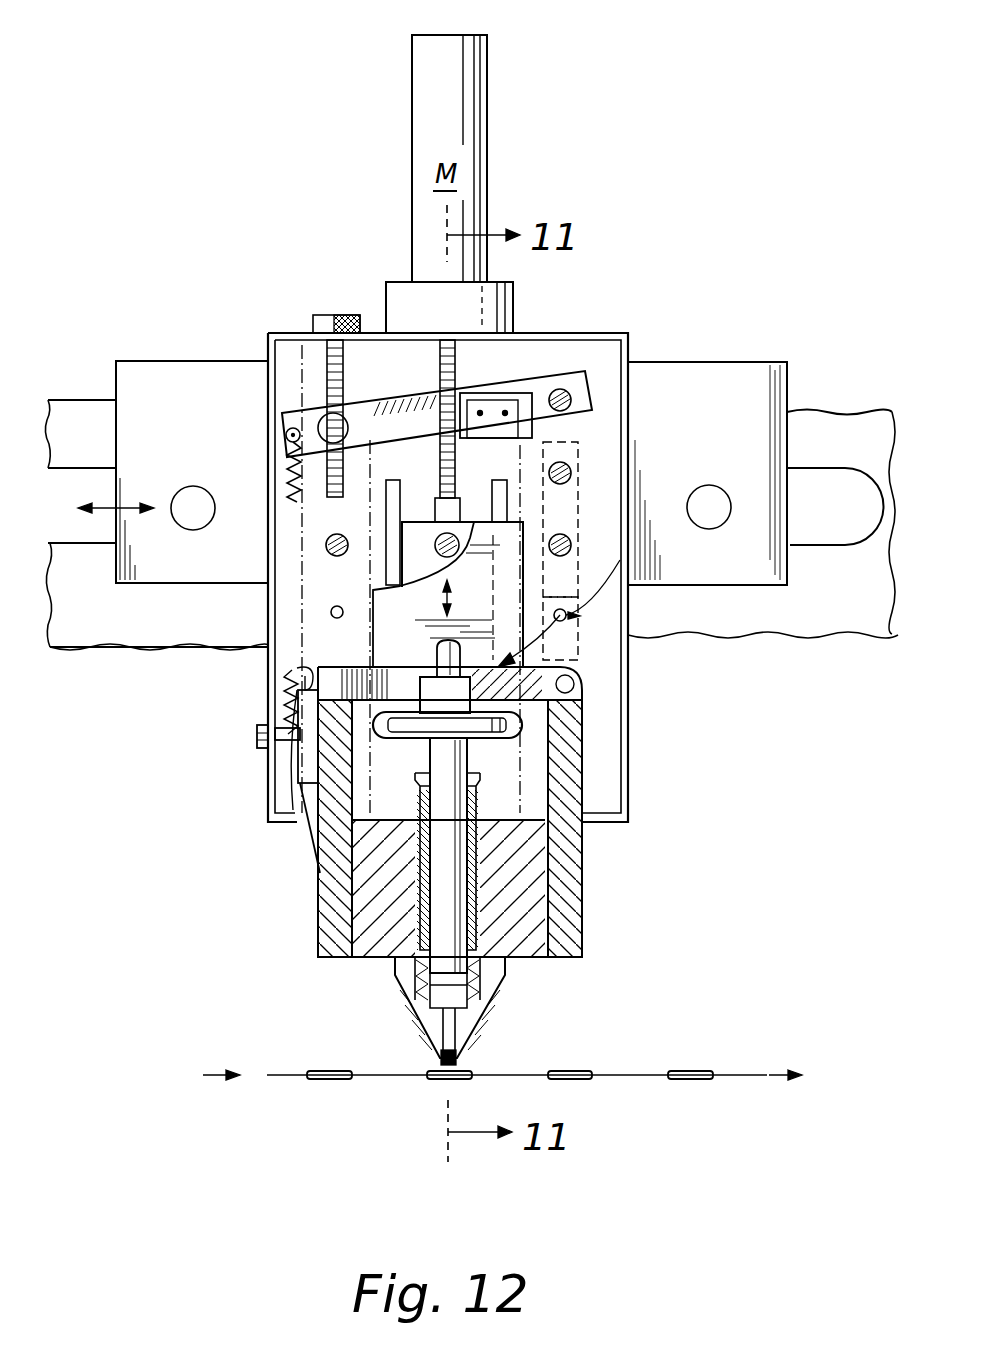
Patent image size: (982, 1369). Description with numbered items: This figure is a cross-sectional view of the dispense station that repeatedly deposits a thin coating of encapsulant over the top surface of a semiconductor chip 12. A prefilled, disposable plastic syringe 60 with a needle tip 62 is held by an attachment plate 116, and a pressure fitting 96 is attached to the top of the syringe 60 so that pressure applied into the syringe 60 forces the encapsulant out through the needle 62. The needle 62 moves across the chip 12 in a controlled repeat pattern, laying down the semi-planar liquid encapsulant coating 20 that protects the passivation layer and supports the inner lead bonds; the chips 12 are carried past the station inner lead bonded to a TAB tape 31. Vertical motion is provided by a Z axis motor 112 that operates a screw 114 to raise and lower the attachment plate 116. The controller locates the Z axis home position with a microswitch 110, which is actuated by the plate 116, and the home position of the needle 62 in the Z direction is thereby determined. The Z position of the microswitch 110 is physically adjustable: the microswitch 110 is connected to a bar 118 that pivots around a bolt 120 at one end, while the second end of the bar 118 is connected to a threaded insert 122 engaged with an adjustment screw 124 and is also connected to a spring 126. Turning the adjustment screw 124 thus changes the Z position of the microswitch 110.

The semiconductor chip 12 is at (326, 1069).
The liquid encapsulant coating 20 is at (700, 1070).
The TAB tape 31 is at (627, 1071).
The syringe 60 is at (438, 757).
The needle tip 62 is at (472, 1037).
The pressure fitting 96 is at (433, 686).
The microswitch 110 is at (490, 420).
The Z axis motor 112 is at (514, 303).
The screw 114 is at (440, 368).
The attachment plate 116 is at (525, 530).
The bar 118 is at (582, 345).
The bolt 120 is at (572, 397).
The threaded insert 122 is at (283, 416).
The adjustment screw 124 is at (313, 322).
The spring 126 is at (283, 480).